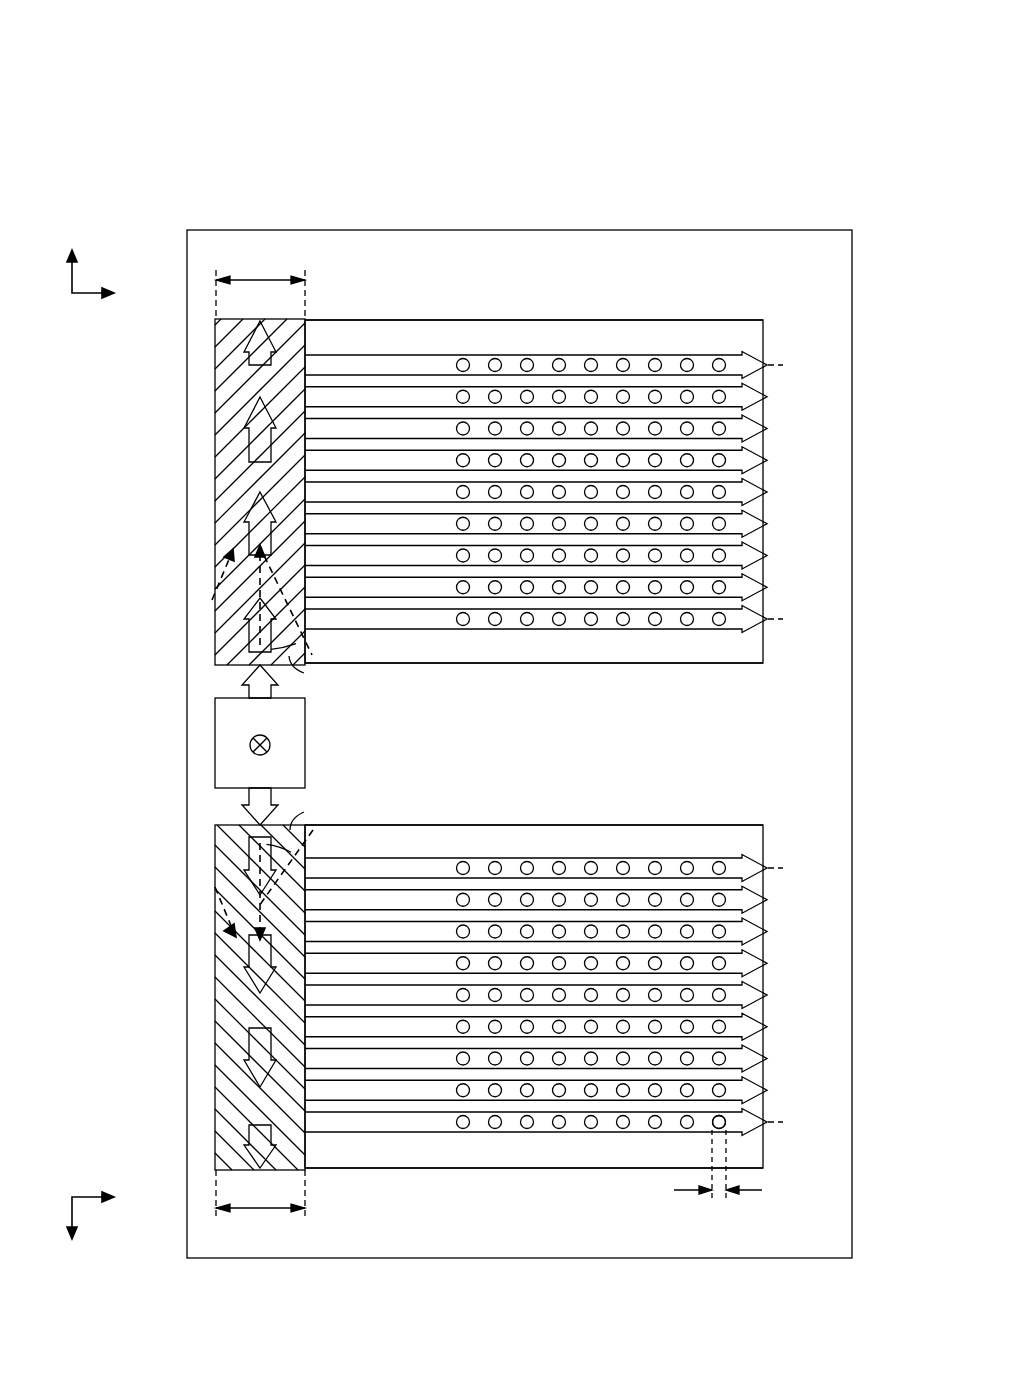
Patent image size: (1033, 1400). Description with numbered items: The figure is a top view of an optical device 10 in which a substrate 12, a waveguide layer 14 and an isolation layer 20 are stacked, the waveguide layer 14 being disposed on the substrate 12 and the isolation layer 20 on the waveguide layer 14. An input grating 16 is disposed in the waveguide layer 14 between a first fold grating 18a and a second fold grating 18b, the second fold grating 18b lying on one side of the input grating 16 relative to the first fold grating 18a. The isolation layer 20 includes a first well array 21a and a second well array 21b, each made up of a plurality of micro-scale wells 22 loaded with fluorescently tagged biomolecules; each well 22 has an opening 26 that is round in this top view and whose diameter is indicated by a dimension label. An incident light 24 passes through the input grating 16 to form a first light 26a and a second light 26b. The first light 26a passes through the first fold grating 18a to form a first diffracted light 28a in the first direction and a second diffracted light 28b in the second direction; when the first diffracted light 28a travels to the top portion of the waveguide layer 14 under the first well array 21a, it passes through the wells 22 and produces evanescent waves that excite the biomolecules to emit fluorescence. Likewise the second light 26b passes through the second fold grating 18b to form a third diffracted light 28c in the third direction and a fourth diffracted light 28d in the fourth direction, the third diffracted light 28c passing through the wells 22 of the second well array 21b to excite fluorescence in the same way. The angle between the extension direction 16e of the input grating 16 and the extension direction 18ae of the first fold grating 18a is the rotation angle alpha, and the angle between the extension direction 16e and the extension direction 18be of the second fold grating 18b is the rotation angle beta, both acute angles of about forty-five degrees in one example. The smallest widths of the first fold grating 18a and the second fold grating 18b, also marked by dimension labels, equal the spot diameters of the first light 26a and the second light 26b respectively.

The optical device 10 is at (77, 25).
The substrate 12 is at (519, 230).
The waveguide layer 14 is at (519, 702).
The input grating 16 is at (215, 745).
The extension direction of the input grating 16e is at (258, 645).
The first fold grating 18a is at (228, 998).
The extension direction of the first fold grating 18ae is at (215, 887).
The second fold grating 18b is at (228, 488).
The extension direction of the second fold grating 18be is at (212, 600).
The isolation layer 20 is at (665, 320).
The first well array 21a is at (781, 866).
The second well array 21b is at (781, 365).
The wells 22 is at (527, 626).
The incident light 24 is at (270, 745).
The opening 26 is at (726, 1123).
The first light 26a is at (248, 800).
The second light 26b is at (248, 690).
The first diffracted light 28a is at (323, 858).
The second diffracted light 28b is at (250, 953).
The third diffracted light 28c is at (323, 332).
The fourth diffracted light 28d is at (250, 356).